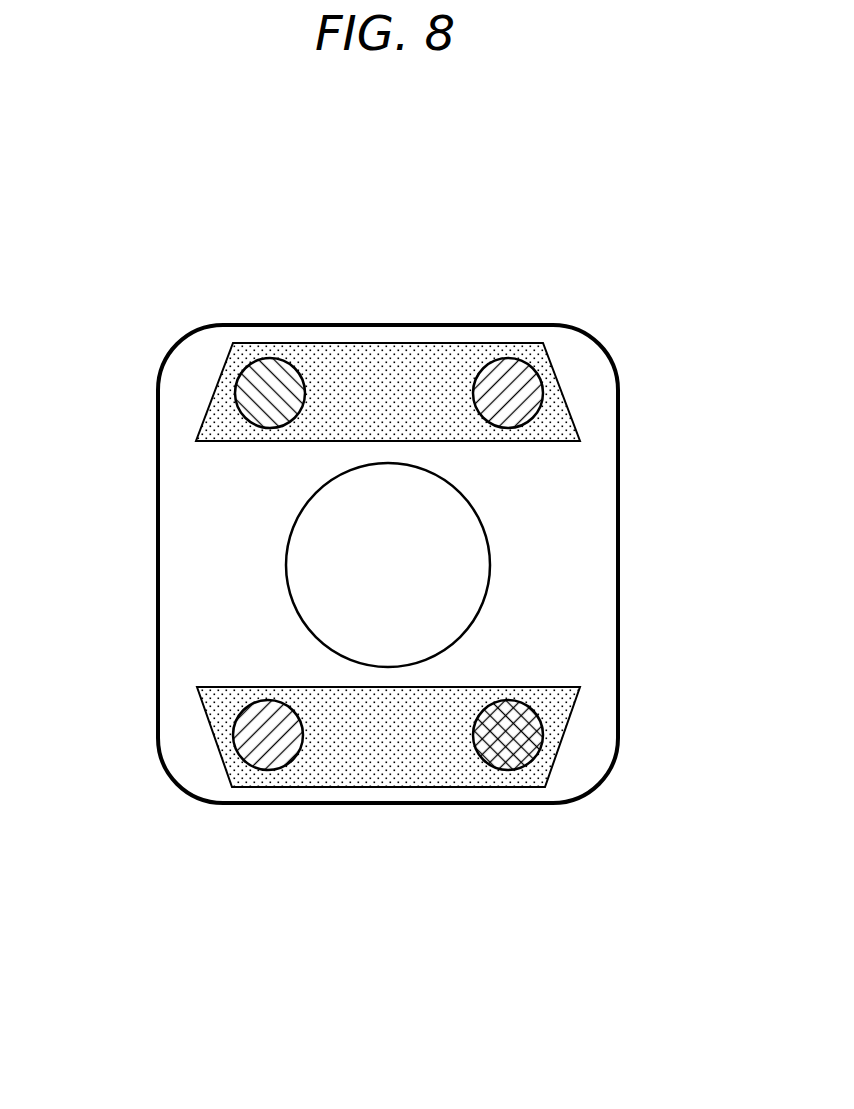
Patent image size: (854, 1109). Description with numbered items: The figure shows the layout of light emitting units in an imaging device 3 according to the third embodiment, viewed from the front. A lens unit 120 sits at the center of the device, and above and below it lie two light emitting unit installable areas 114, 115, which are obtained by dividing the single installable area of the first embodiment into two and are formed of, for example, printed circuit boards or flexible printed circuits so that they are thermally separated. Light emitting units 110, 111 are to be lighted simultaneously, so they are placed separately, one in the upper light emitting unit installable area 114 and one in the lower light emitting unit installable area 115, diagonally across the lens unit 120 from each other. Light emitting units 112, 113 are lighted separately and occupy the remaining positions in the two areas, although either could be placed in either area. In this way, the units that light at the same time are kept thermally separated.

The imaging device 3 is at (541, 803).
The light emitting unit 110 is at (532, 368).
The light emitting unit 111 is at (232, 742).
The light emitting unit 112 is at (246, 366).
The light emitting unit 113 is at (545, 733).
The light emitting unit installable area 114 is at (386, 368).
The light emitting unit installable area 115 is at (326, 765).
The lens unit 120 is at (490, 537).